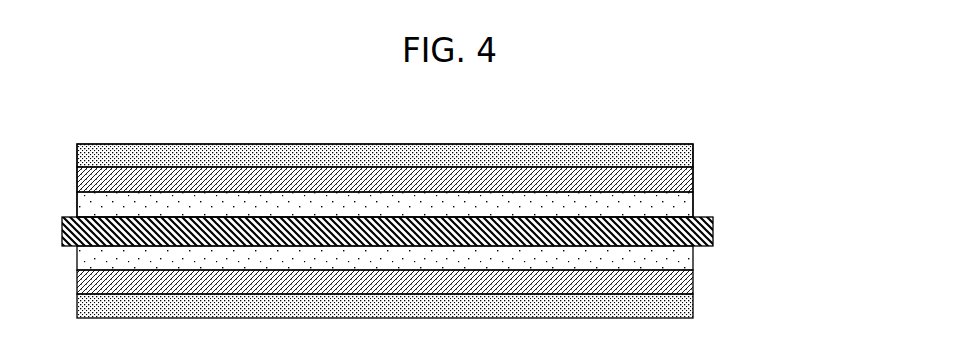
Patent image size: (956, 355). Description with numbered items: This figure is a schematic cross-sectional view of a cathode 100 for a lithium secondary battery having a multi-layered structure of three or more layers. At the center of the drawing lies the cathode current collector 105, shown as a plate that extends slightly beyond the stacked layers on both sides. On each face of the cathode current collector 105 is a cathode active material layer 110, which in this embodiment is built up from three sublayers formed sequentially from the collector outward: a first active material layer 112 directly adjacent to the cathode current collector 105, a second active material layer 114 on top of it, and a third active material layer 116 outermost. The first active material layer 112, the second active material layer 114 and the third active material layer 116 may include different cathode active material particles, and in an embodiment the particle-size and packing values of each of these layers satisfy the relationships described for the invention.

The cathode 100 is at (92, 115).
The cathode current collector 105 is at (713, 230).
The cathode active material layer 110 is at (803, 145).
The first active material layer 112 is at (693, 203).
The second active material layer 114 is at (693, 182).
The third active material layer 116 is at (693, 157).